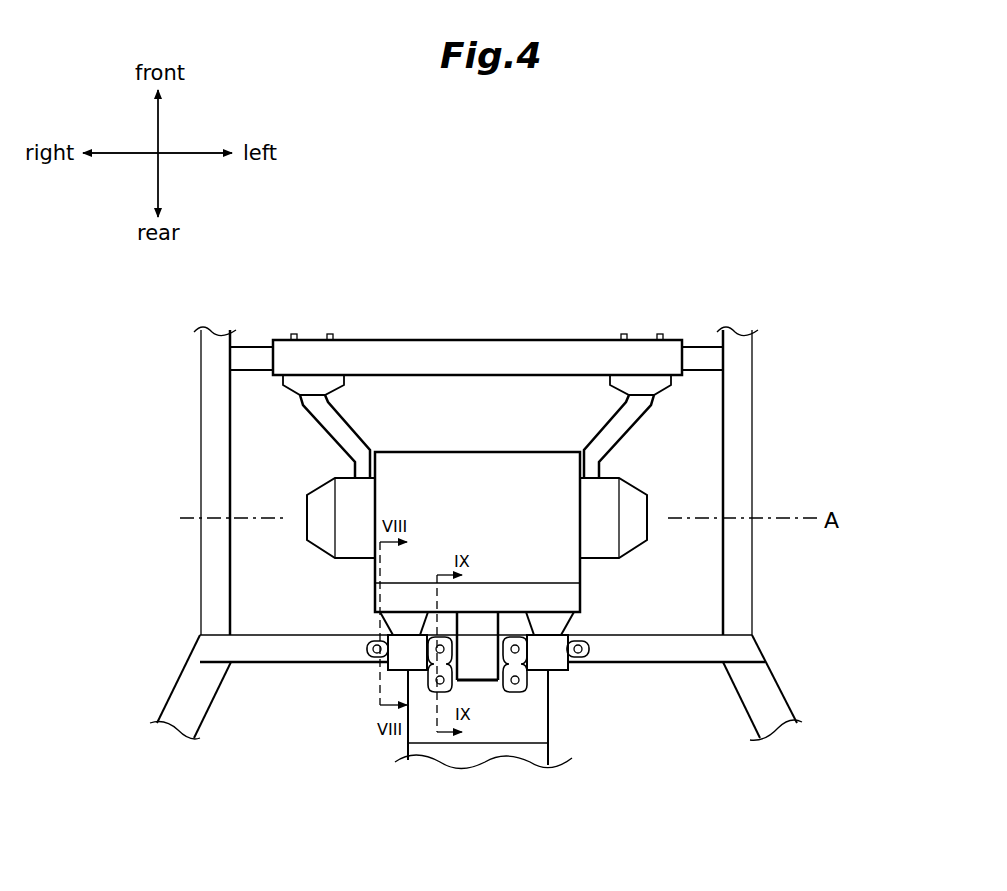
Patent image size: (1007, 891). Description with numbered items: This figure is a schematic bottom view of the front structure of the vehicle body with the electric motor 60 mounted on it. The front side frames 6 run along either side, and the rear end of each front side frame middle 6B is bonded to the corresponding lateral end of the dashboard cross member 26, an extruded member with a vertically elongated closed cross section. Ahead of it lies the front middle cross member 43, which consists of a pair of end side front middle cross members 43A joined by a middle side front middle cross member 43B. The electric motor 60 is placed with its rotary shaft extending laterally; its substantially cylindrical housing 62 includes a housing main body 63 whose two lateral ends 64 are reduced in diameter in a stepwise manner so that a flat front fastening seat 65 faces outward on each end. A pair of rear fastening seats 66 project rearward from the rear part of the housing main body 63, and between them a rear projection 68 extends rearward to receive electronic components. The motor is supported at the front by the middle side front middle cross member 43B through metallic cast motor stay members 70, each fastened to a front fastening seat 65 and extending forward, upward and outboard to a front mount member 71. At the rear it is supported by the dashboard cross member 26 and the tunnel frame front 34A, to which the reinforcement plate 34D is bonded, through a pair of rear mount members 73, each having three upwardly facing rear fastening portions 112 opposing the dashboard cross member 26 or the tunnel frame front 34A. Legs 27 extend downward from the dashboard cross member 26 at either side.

The front side frame 6 is at (756, 355).
The front side frame middle 6B is at (738, 412).
The dashboard cross member 26 is at (753, 652).
The leg 27 is at (182, 698).
The tunnel frame front 34A is at (535, 762).
The reinforcement plate 34D is at (528, 720).
The front middle cross member 43 is at (480, 318).
The end side front middle cross member 43A is at (700, 350).
The middle side front middle cross member 43B is at (483, 344).
The electric motor 60 is at (489, 516).
The housing 62 is at (457, 463).
The housing main body 63 is at (367, 504).
The lateral end 64 is at (323, 543).
The front fastening seat 65 is at (368, 458).
The rear fastening seat 66 is at (393, 623).
The rear projection 68 is at (485, 675).
The motor stay member 70 is at (318, 425).
The front mount member 71 is at (342, 386).
The rear mount member 73 is at (398, 664).
The rear fastening portion 112 is at (365, 662).